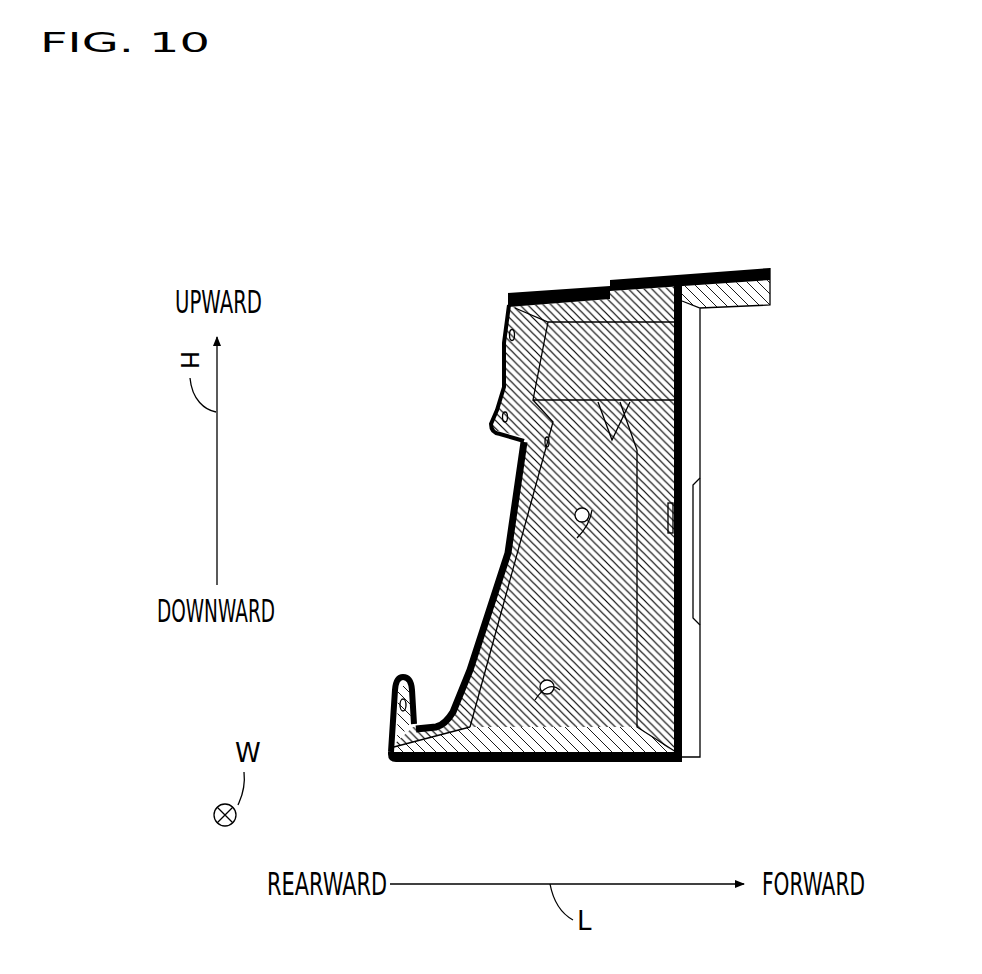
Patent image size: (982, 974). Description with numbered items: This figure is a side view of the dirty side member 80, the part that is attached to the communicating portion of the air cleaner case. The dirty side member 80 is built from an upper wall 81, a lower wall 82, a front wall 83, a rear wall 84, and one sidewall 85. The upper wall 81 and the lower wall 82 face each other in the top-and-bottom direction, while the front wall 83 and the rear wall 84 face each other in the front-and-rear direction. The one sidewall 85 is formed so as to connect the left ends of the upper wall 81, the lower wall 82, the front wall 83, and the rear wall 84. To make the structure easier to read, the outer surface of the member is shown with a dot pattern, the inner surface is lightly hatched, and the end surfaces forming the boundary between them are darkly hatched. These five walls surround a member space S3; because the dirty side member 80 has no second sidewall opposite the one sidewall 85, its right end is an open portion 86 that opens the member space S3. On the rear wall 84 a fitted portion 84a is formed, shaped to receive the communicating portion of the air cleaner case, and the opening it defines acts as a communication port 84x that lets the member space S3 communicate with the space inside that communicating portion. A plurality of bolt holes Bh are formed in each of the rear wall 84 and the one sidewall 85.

The dirty side member 80 is at (492, 222).
The upper wall 81 is at (583, 290).
The lower wall 82 is at (500, 763).
The front wall 83 is at (688, 400).
The rear wall 84 is at (500, 392).
The fitted portion 84a is at (470, 662).
The communication port 84x is at (460, 586).
The one sidewall 85 is at (505, 552).
The open portion 86 is at (660, 687).
The bolt holes Bh is at (510, 296).
The member space S3 is at (613, 644).